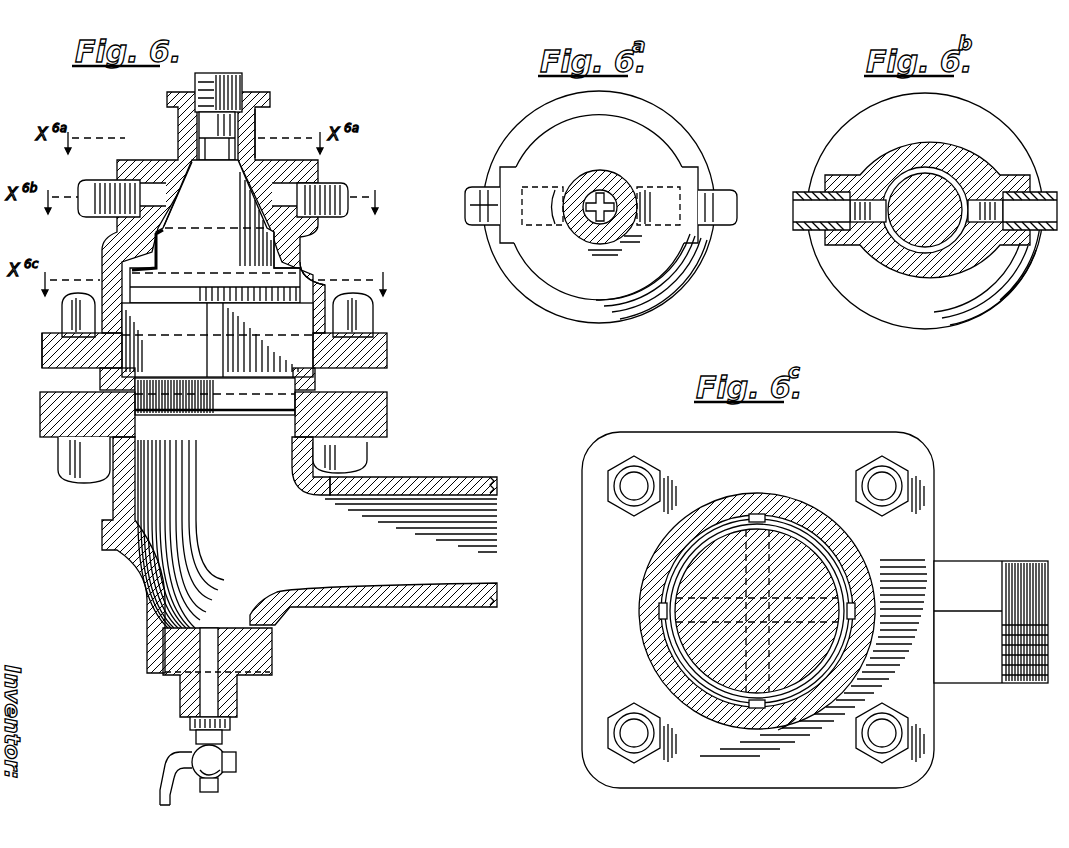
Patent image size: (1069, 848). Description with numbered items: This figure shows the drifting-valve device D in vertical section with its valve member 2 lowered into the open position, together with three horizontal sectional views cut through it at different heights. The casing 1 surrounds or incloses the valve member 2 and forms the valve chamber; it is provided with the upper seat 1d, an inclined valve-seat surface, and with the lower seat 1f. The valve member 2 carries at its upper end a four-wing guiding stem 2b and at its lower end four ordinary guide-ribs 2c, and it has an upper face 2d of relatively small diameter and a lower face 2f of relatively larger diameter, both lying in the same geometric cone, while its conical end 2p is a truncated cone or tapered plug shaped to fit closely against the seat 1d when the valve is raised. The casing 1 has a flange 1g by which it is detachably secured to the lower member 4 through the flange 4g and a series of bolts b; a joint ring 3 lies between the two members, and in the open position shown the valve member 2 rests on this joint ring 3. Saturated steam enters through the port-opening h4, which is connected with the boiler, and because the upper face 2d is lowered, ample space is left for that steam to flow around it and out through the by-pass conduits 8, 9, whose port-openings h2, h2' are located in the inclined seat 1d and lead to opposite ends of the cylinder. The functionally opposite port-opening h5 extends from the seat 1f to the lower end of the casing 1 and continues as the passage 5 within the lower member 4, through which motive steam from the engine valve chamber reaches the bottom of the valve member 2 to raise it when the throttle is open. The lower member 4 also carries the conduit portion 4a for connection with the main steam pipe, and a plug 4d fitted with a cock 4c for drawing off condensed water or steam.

In FIG. 6, the casing 1 is at (102, 258).
In FIG. 6A, the casing 1 is at (510, 140).
In FIG. 6B, the casing 1 is at (838, 148).
In FIG. 6C, the casing 1 is at (745, 492).
In FIG. 6, the upper seat 1d is at (256, 168).
In FIG. 6B, the upper seat 1d is at (920, 175).
In FIG. 6, the lower seat 1f is at (328, 284).
In FIG. 6, the flange 1g is at (387, 356).
In FIG. 6C, the flange 1g is at (746, 444).
In FIG. 6, the valve member 2 is at (326, 258).
In FIG. 6C, the valve member 2 is at (832, 592).
In FIG. 6, the four-wing guiding stem 2b is at (238, 142).
In FIG. 6A, the four-wing guiding stem 2b is at (602, 186).
In FIG. 6, the guide-ribs 2c is at (216, 380).
In FIG. 6C, the guide-ribs 2c is at (763, 513).
In FIG. 6, the upper face 2d is at (304, 240).
In FIG. 6, the lower face 2f is at (194, 284).
In FIG. 6C, the lower face 2f is at (832, 560).
In FIG. 6, the conical end 2p is at (172, 186).
In FIG. 6B, the conical end 2p is at (926, 248).
In FIG. 6, the joint ring 3 is at (280, 412).
In FIG. 6, the lower member 4 is at (112, 500).
In FIG. 6, the conduit portion 4a is at (382, 608).
In FIG. 6C, the conduit portion 4a is at (976, 568).
In FIG. 6, the cock 4c is at (192, 756).
In FIG. 6, the plug 4d is at (164, 674).
In FIG. 6, the flange 4g is at (387, 413).
In FIG. 6, the passage 5 is at (283, 546).
In FIG. 6, the by-pass conduit 8 is at (100, 214).
In FIG. 6A, the by-pass conduit 8 is at (474, 188).
In FIG. 6B, the by-pass conduit 8 is at (806, 232).
In FIG. 6, the by-pass conduit 9 is at (346, 195).
In FIG. 6A, the by-pass conduit 9 is at (724, 194).
In FIG. 6B, the by-pass conduit 9 is at (1050, 232).
In FIG. 6C, the bolts b is at (640, 480).
In FIG. 6, the valve device D is at (31, 348).
In FIG. 6, the port-opening h2 is at (122, 180).
In FIG. 6A, the port-opening h2 is at (542, 229).
In FIG. 6B, the port-opening h2 is at (843, 250).
In FIG. 6, the port-opening h2' is at (321, 180).
In FIG. 6A, the port-opening h2' is at (658, 192).
In FIG. 6B, the port-opening h2' is at (1009, 258).
In FIG. 6, the port-opening h4 is at (194, 120).
In FIG. 6A, the port-opening h4 is at (630, 238).
In FIG. 6, the port-opening h5 is at (374, 306).
In FIG. 6C, the port-opening h5 is at (826, 700).